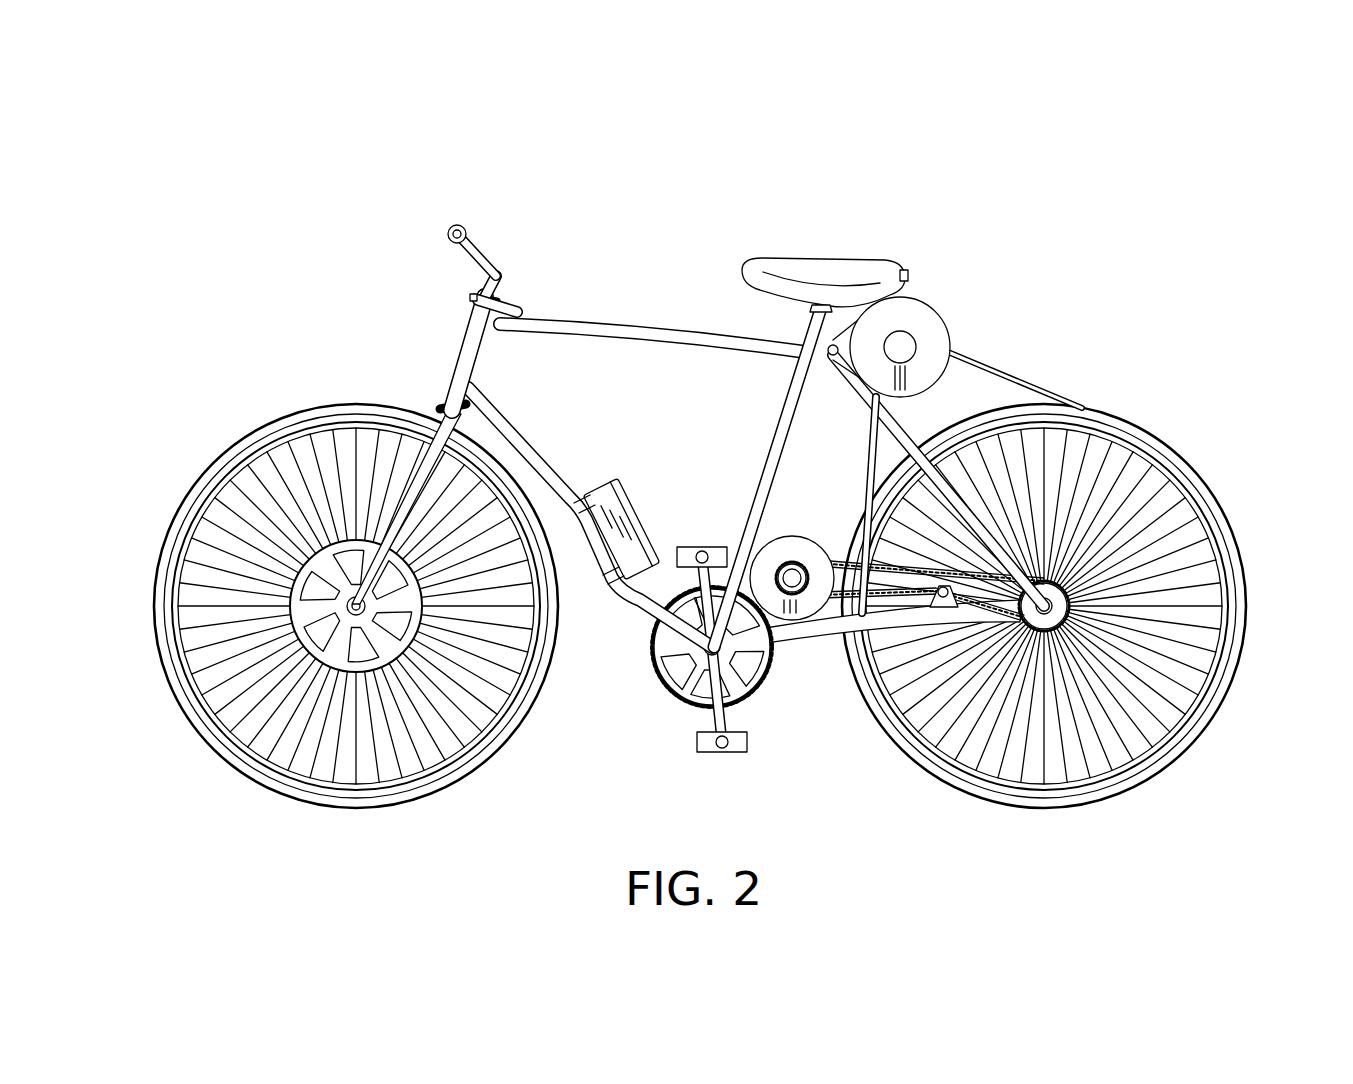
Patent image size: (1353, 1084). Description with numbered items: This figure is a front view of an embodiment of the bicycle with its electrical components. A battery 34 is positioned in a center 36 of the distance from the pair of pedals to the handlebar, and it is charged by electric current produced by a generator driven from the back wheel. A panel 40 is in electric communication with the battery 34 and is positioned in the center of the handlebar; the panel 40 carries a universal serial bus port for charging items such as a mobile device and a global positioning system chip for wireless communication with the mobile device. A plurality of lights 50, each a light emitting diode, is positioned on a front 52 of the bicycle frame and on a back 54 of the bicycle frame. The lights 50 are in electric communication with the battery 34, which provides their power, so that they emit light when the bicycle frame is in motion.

The battery 34 is at (630, 513).
The center 36 is at (636, 412).
The panel 40 is at (520, 303).
The plurality of lights 50 is at (470, 298).
The front 52 is at (417, 168).
The back 54 is at (943, 175).